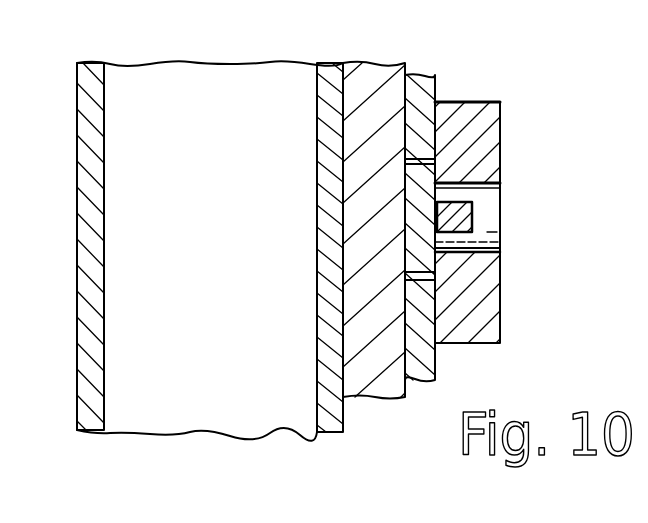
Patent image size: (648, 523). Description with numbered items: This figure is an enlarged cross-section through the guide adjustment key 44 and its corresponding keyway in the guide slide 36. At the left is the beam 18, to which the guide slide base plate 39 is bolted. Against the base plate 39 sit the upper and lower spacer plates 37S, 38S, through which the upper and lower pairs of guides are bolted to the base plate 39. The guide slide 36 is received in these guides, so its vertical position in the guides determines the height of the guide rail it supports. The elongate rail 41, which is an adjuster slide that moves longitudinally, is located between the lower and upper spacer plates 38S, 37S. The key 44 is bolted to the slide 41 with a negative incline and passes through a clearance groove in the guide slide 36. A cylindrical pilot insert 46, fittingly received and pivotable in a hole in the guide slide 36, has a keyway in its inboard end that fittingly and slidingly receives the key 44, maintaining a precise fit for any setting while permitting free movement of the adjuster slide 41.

The beam 18 is at (349, 425).
The guide slide base plate 39 is at (386, 76).
The upper spacer plate 37S is at (462, 62).
The lower spacer plate 38S is at (437, 371).
The guide slide 36 is at (502, 133).
The guide adjustment key 44 is at (473, 210).
The cylindrical pilot insert 46 is at (502, 242).
The rail 41 is at (432, 274).